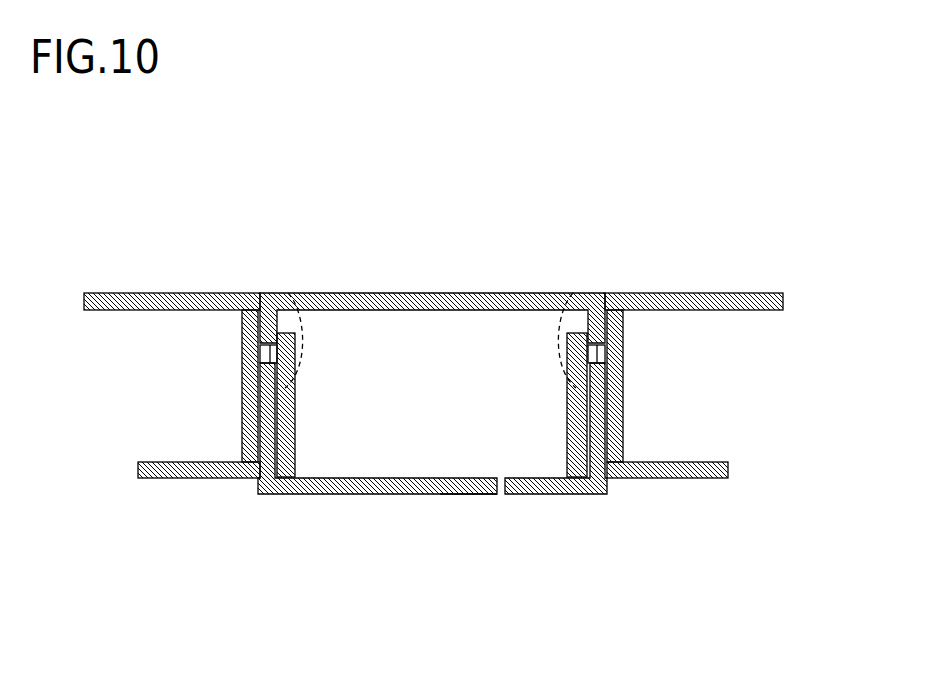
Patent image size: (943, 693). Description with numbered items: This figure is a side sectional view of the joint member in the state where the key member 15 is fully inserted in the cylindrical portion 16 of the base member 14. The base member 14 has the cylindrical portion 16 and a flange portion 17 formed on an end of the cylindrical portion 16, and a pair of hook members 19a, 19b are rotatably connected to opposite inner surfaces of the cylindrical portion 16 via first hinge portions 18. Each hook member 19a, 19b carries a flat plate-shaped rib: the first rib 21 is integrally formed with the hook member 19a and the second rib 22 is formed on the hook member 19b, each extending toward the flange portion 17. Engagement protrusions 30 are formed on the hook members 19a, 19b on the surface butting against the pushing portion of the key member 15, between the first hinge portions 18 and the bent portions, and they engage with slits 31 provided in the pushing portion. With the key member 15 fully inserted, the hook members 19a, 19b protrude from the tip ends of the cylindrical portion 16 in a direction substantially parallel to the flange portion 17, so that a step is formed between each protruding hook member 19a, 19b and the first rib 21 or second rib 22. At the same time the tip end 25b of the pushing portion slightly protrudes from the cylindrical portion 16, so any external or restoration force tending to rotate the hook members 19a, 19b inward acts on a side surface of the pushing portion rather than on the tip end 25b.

The base member 14 is at (690, 263).
The key member 15 is at (415, 293).
The cylindrical portion 16 is at (623, 412).
The flange portion 17 is at (143, 293).
The first hinge portion 18 is at (258, 352).
The hook member 19a is at (178, 478).
The hook member 19b is at (692, 478).
The first rib 21 is at (352, 494).
The second rib 22 is at (553, 495).
The tip end of the pushing portion 25b is at (443, 495).
The engagement protrusion 30 is at (295, 421).
The slit 31 is at (288, 293).